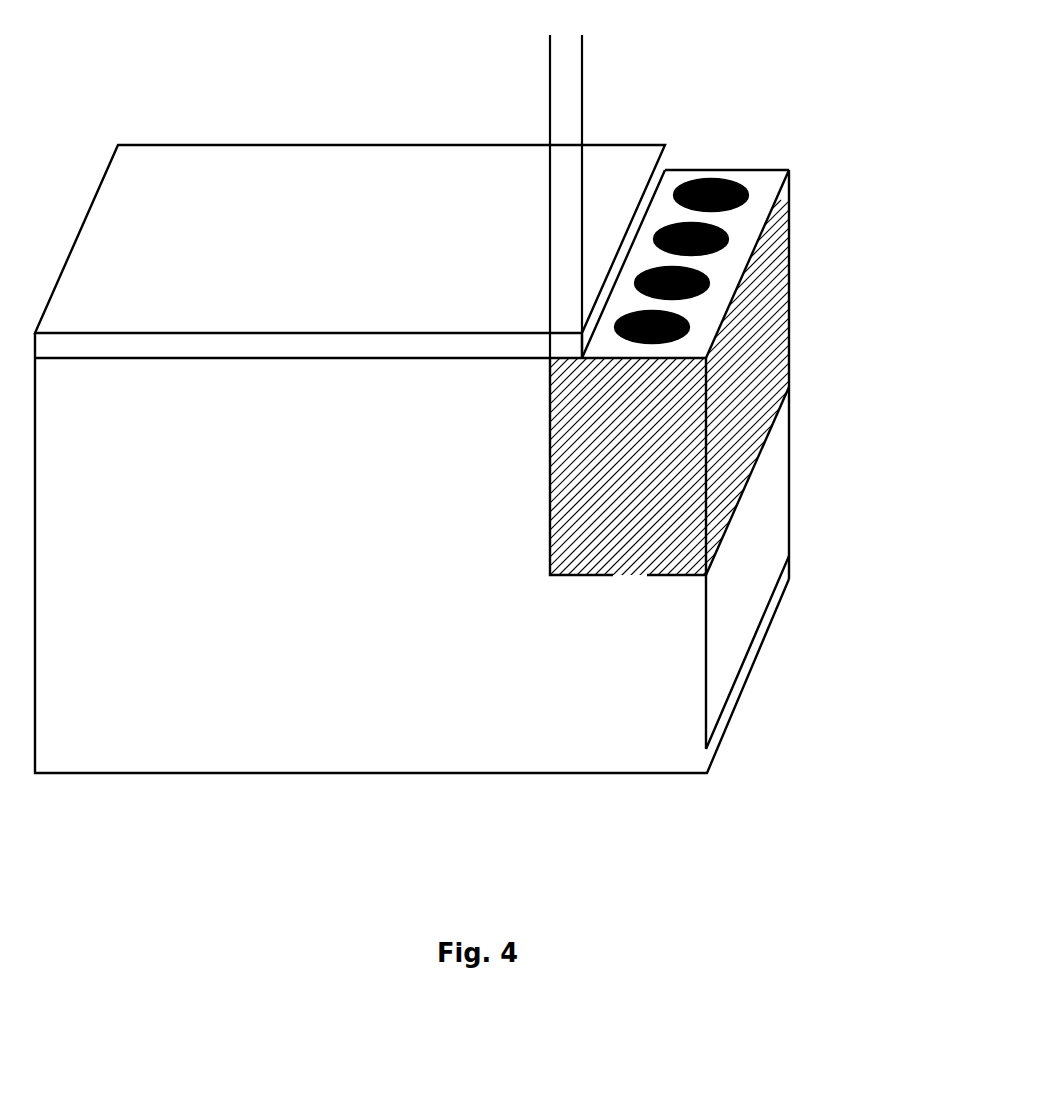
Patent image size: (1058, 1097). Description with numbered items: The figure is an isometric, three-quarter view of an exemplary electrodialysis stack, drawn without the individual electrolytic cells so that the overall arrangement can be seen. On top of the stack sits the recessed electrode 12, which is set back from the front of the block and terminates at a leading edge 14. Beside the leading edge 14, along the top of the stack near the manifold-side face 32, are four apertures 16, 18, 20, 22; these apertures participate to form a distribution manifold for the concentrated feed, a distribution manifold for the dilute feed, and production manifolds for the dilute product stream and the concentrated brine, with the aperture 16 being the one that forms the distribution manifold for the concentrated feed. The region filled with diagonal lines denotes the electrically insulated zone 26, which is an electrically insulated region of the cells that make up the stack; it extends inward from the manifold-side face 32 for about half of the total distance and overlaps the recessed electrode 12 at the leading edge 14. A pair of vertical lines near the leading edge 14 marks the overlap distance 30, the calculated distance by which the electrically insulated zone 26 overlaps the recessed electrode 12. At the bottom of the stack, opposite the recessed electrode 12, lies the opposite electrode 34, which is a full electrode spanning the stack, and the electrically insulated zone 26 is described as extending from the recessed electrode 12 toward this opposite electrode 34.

The recessed electrode 12 is at (230, 173).
The leading edge 14 is at (647, 202).
The aperture 16 is at (788, 170).
The aperture 18 is at (728, 238).
The aperture 20 is at (709, 283).
The aperture 22 is at (689, 329).
The electrically insulated zone 26 is at (678, 524).
The overlap distance 30 is at (605, 65).
The manifold-side face 32 is at (722, 656).
The opposite electrode 34 is at (377, 758).